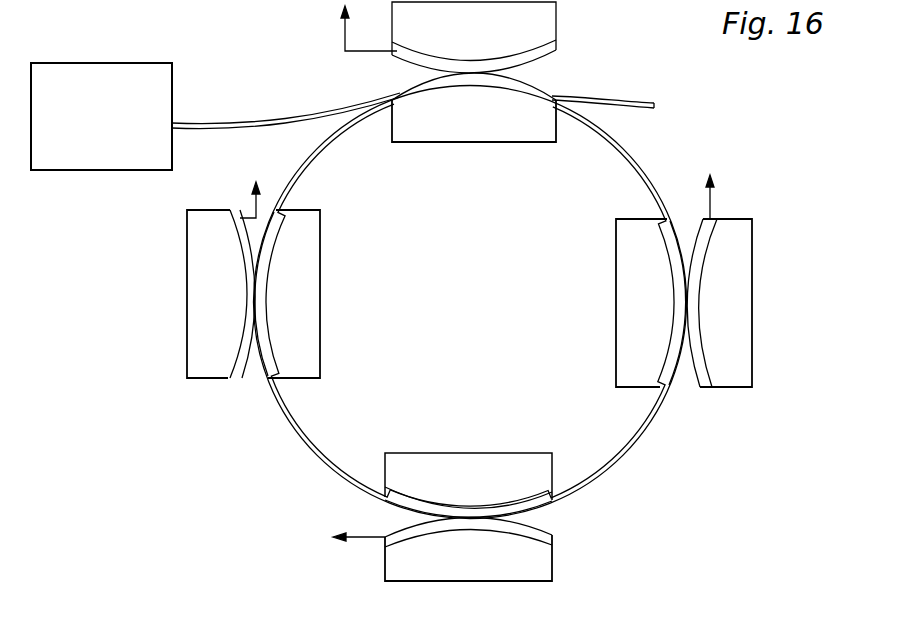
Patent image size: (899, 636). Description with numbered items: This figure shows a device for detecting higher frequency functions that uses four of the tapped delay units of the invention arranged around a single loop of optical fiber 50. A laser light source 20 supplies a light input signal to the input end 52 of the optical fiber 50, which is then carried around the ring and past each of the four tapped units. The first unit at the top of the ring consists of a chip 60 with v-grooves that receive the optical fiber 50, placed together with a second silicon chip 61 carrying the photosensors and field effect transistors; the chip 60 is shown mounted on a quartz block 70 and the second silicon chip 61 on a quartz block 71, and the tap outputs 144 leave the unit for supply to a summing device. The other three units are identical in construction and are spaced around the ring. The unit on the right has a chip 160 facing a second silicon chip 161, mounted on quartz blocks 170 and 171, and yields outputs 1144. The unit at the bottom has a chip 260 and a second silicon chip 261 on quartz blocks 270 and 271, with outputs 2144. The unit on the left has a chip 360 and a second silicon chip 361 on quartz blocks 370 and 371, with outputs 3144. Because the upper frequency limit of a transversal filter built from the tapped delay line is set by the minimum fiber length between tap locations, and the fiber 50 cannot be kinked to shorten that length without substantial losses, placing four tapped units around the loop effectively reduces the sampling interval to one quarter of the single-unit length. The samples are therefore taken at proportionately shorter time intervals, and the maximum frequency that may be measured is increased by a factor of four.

The laser light source 20 is at (99, 63).
The input end 52 is at (255, 122).
The optical fiber 50 is at (318, 148).
The chip 60 is at (413, 85).
The second silicon chip 61 is at (553, 52).
The quartz block 70 is at (512, 128).
The quartz block 71 is at (550, 17).
The outputs 144 is at (345, 38).
The chip 160 is at (672, 372).
The second silicon chip 161 is at (708, 380).
The quartz block 170 is at (628, 312).
The quartz block 171 is at (738, 327).
The outputs 1144 is at (712, 203).
The chip 260 is at (534, 505).
The second silicon chip 261 is at (544, 542).
The quartz block 270 is at (471, 462).
The quartz block 271 is at (515, 572).
The outputs 2144 is at (363, 542).
The chip 360 is at (274, 240).
The second silicon chip 361 is at (237, 374).
The quartz block 370 is at (303, 313).
The quartz block 371 is at (197, 334).
The outputs 3144 is at (254, 205).